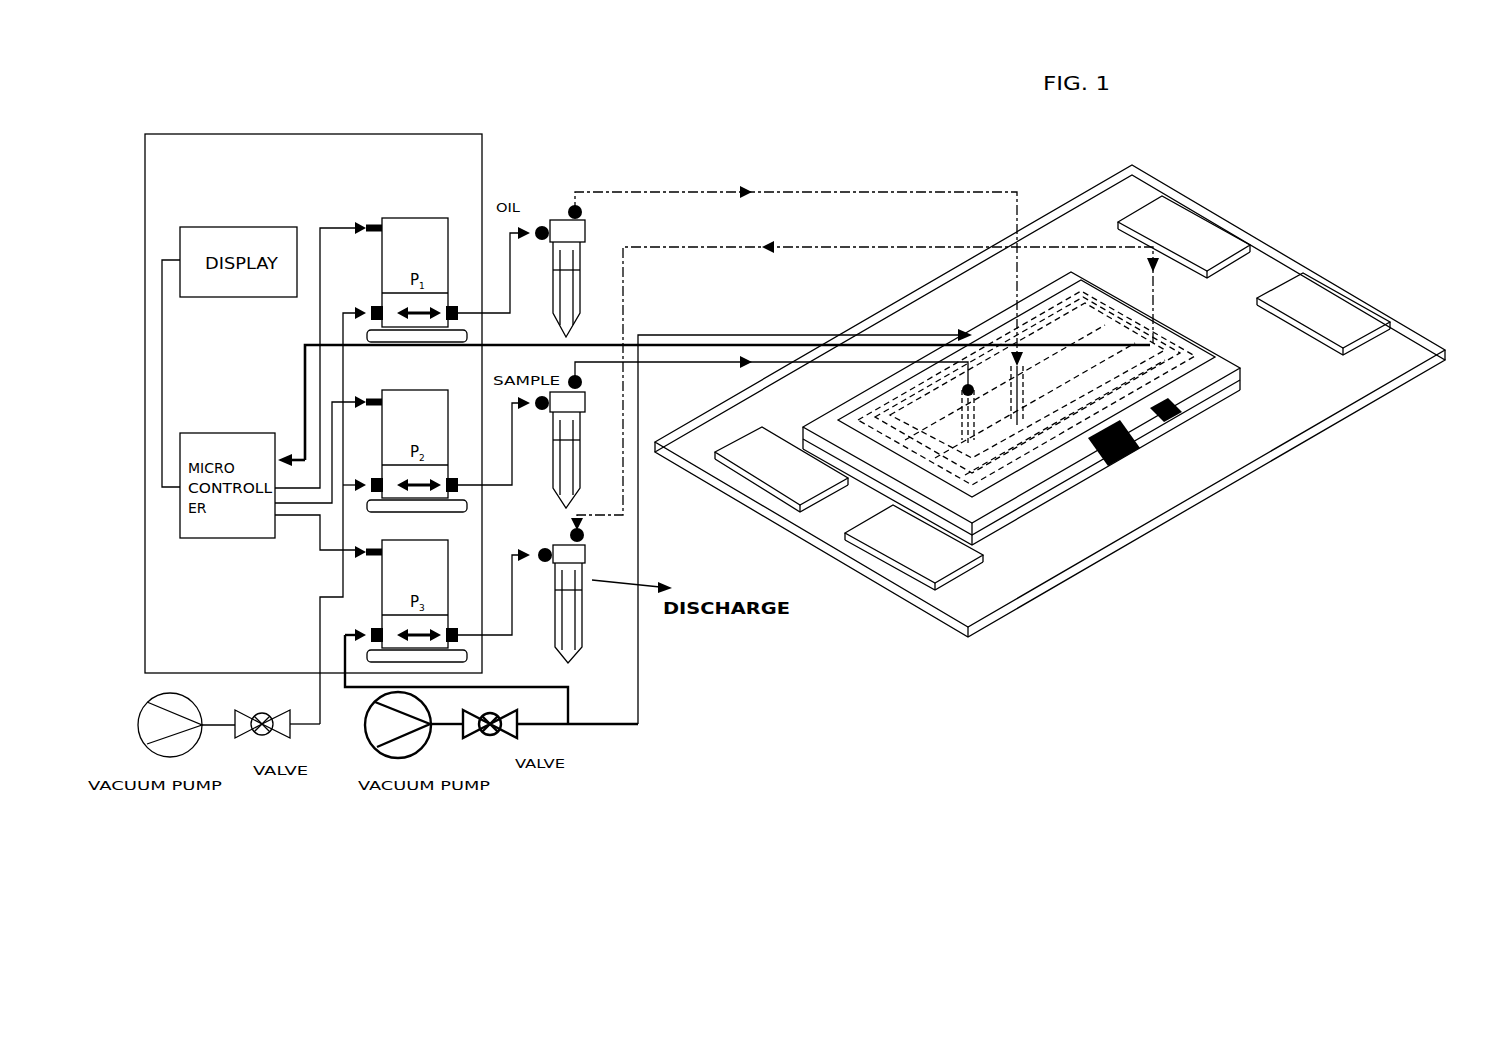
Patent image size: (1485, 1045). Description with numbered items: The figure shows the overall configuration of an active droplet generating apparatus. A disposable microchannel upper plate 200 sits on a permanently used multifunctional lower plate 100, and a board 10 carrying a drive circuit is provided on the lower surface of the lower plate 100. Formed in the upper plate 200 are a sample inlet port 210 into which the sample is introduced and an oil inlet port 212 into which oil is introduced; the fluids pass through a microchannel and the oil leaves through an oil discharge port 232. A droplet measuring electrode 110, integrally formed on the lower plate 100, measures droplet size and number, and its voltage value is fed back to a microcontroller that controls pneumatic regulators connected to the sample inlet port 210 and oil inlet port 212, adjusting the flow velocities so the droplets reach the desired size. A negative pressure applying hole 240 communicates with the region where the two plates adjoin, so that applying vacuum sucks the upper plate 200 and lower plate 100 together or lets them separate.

The board 10 is at (1048, 560).
The multifunctional lower plate 100 is at (1330, 370).
The droplet measuring electrode 110 is at (1200, 410).
The disposable microchannel upper plate 200 is at (1300, 305).
The sample inlet port 210 is at (1065, 470).
The oil inlet port 212 is at (1150, 440).
The oil discharge port 232 is at (1240, 268).
The negative pressure applying hole 240 is at (977, 353).